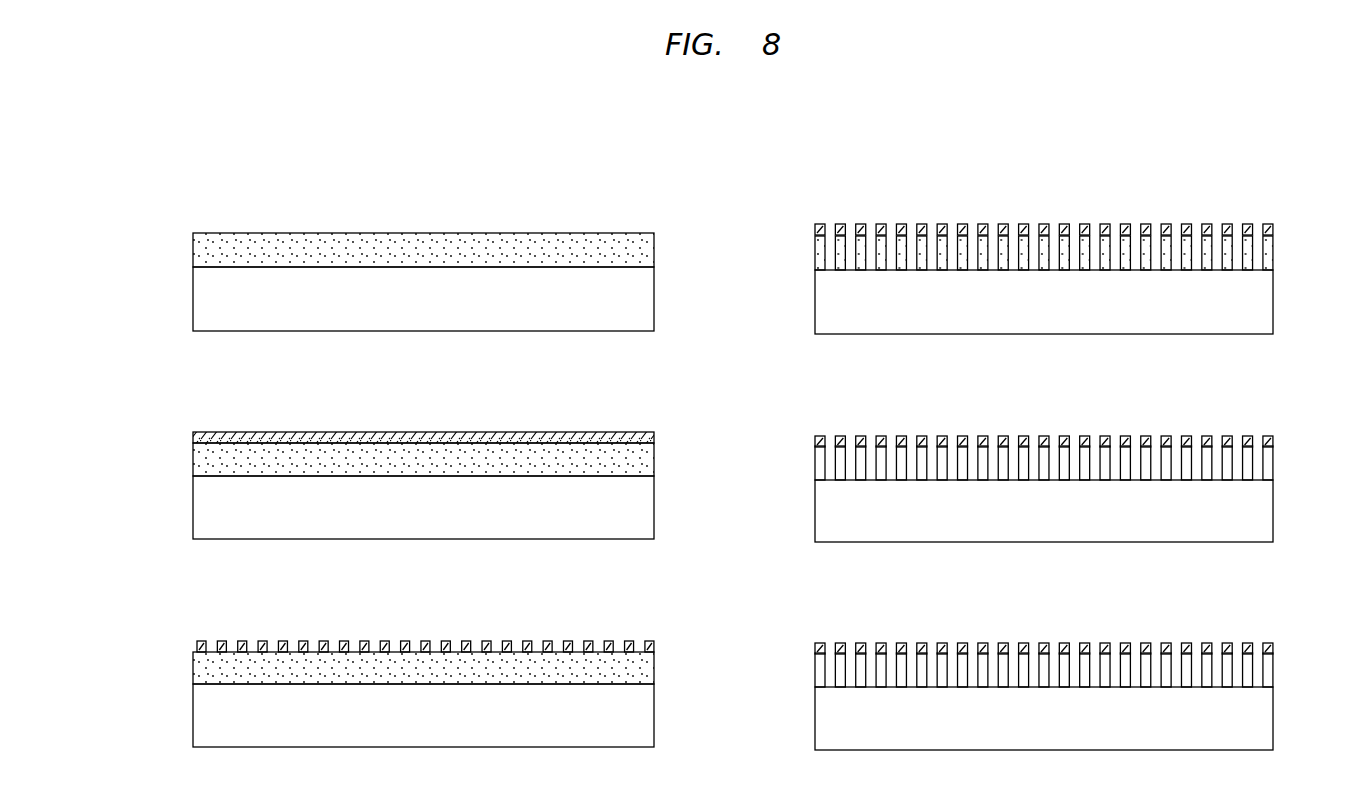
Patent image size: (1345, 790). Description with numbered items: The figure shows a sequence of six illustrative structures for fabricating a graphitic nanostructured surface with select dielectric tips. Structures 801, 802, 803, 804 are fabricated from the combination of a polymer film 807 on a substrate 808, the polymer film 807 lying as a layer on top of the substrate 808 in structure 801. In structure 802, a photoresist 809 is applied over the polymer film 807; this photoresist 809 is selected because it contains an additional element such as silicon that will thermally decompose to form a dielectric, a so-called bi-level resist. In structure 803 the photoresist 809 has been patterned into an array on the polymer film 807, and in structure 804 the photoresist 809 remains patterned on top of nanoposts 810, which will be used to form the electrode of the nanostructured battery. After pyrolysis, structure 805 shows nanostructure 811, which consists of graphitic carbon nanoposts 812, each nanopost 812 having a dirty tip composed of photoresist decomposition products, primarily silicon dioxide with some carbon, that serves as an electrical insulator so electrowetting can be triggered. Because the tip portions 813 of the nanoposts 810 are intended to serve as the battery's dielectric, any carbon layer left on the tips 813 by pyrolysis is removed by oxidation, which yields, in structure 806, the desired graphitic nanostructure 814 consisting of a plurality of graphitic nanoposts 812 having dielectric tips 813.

The structure 801 is at (412, 284).
The structure 802 is at (381, 487).
The structure 803 is at (381, 694).
The structure 804 is at (1034, 267).
The structure 805 is at (1001, 491).
The structure 806 is at (1001, 699).
The polymer film 807 is at (655, 240).
The substrate 808 is at (449, 333).
The photoresist 809 is at (517, 432).
The nanoposts 810 is at (1275, 240).
The nanostructure 811 is at (1308, 458).
The graphitic carbon nanopost 812 is at (1248, 448).
The tip portion 813 is at (927, 440).
The graphitic nanostructure 814 is at (1308, 666).